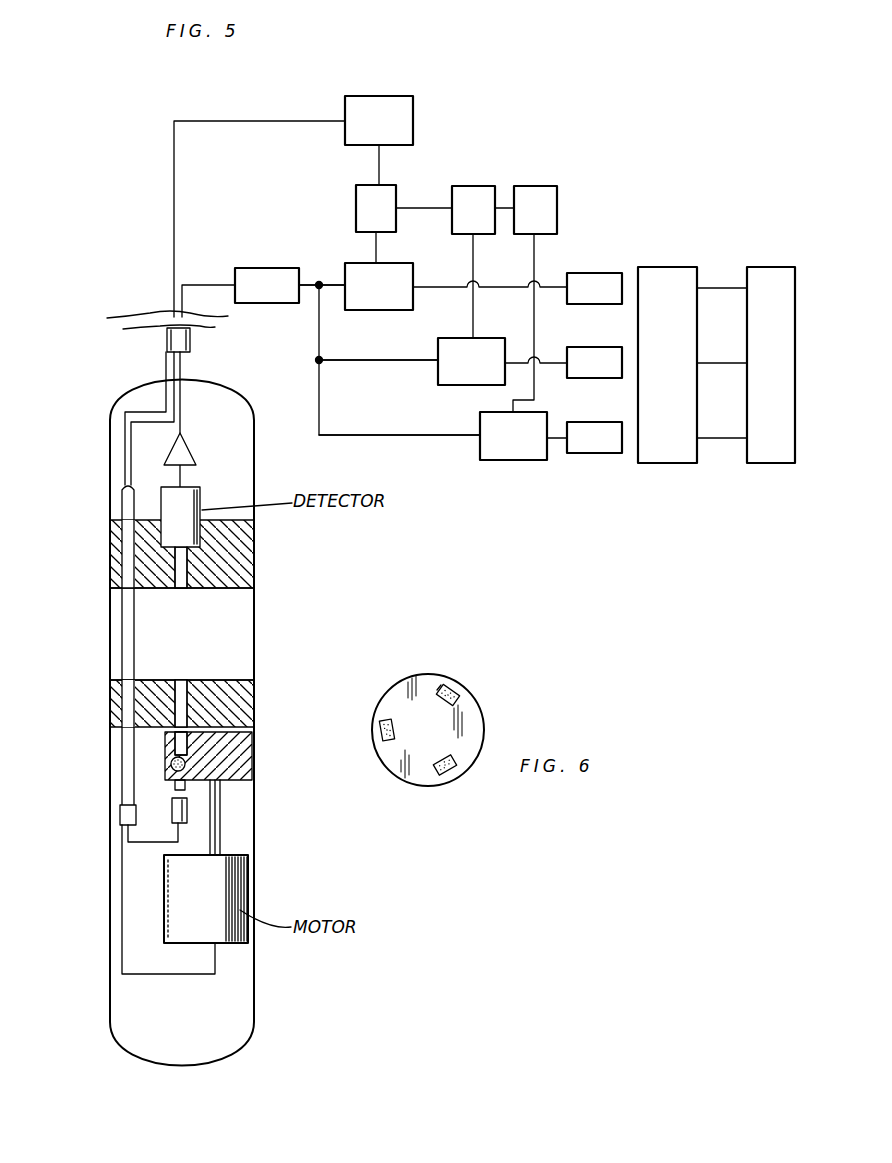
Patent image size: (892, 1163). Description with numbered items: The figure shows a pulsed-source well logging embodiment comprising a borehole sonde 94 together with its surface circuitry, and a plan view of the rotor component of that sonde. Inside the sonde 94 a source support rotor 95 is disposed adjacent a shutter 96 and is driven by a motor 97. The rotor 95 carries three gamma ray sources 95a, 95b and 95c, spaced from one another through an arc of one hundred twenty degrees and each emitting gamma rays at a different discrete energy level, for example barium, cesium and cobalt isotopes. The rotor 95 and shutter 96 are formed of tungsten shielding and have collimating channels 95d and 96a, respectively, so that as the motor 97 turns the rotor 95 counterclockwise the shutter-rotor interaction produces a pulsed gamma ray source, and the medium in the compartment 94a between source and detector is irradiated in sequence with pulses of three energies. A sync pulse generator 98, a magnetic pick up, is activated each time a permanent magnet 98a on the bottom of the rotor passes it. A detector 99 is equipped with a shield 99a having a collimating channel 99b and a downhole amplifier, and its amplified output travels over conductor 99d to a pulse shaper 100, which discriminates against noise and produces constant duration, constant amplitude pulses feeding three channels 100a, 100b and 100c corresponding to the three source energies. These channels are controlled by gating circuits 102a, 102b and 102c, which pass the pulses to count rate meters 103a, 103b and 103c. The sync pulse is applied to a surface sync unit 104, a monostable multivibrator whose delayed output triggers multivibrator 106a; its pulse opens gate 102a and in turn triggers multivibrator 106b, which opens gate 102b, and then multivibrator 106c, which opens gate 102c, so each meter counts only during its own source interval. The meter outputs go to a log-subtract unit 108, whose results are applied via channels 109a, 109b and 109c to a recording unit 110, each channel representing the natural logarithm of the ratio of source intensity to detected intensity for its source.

In FIG. 5, the borehole sonde 94 is at (94, 403).
In FIG. 5, the compartment 94a is at (246, 620).
In FIG. 5, the source support rotor 95 is at (254, 751).
In FIG. 6, the source support rotor 95 is at (398, 684).
In FIG. 5, the gamma ray source 95a is at (170, 763).
In FIG. 6, the gamma ray source 95a is at (458, 697).
In FIG. 6, the gamma ray source 95b is at (450, 778).
In FIG. 6, the gamma ray source 95c is at (378, 724).
In FIG. 5, the collimating channel 95d is at (167, 743).
In FIG. 6, the collimating channel 95d is at (438, 689).
In FIG. 5, the shutter 96 is at (254, 696).
In FIG. 5, the collimating channel 96a is at (178, 682).
In FIG. 5, the motor 97 is at (250, 894).
In FIG. 5, the sync pulse generator 98 is at (170, 818).
In FIG. 5, the permanent magnet 98a is at (168, 787).
In FIG. 5, the detector 99 is at (203, 498).
In FIG. 5, the shield 99a is at (258, 556).
In FIG. 5, the collimating channel 99b is at (182, 585).
In FIG. 5, the conductor 99d is at (224, 281).
In FIG. 5, the pulse shaper 100 is at (255, 303).
In FIG. 5, the channel 100a is at (333, 283).
In FIG. 5, the channel 100b is at (398, 362).
In FIG. 5, the channel 100c is at (400, 437).
In FIG. 5, the gating circuit 102a is at (415, 280).
In FIG. 5, the gating circuit 102b is at (437, 348).
In FIG. 5, the gating circuit 102c is at (525, 462).
In FIG. 5, the count rate meter 103a is at (610, 273).
In FIG. 5, the count rate meter 103b is at (605, 347).
In FIG. 5, the count rate meter 103c is at (603, 453).
In FIG. 5, the surface sync unit 104 is at (413, 122).
In FIG. 5, the monostable multivibrator 106a is at (356, 200).
In FIG. 5, the monostable multivibrator 106b is at (470, 186).
In FIG. 5, the monostable multivibrator 106c is at (557, 203).
In FIG. 5, the log-subtract unit 108 is at (682, 265).
In FIG. 5, the channel 109a is at (724, 285).
In FIG. 5, the channel 109b is at (726, 360).
In FIG. 5, the channel 109c is at (727, 440).
In FIG. 5, the recording unit 110 is at (764, 267).